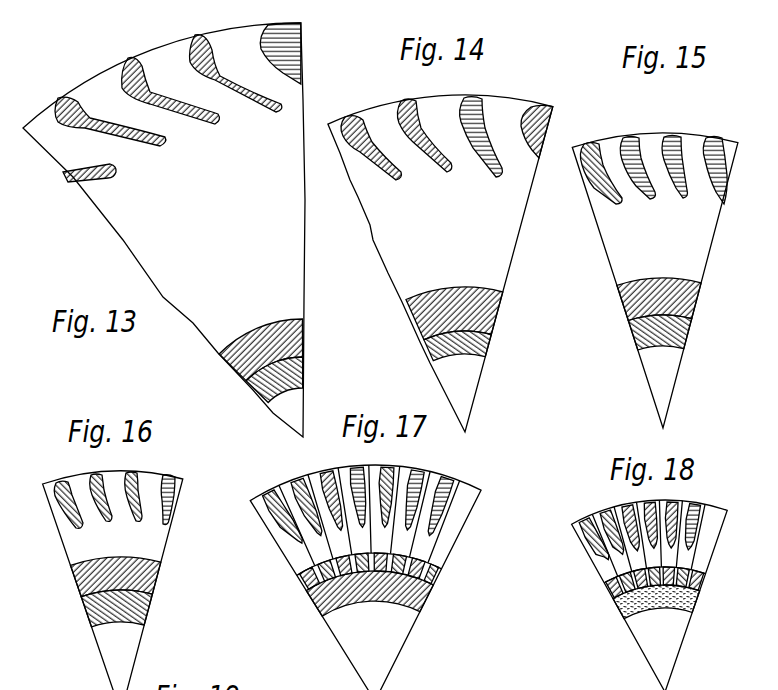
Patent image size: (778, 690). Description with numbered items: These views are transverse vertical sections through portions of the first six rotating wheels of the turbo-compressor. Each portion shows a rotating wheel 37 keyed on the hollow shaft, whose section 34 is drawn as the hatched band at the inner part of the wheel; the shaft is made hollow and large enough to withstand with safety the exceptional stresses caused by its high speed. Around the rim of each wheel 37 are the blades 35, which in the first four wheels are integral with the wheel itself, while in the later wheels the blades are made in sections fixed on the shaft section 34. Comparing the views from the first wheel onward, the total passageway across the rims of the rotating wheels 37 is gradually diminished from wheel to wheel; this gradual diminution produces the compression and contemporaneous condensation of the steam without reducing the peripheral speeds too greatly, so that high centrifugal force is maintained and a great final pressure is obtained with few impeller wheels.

In FIG. 13, the shaft section 34 is at (310, 362).
In FIG. 14, the shaft section 34 is at (493, 340).
In FIG. 15, the shaft section 34 is at (690, 337).
In FIG. 16, the shaft section 34 is at (152, 605).
In FIG. 17, the shaft section 34 is at (423, 597).
In FIG. 18, the shaft section 34 is at (702, 603).
In FIG. 13, the blade 35 is at (77, 103).
In FIG. 14, the blade 35 is at (533, 113).
In FIG. 15, the blade 35 is at (717, 140).
In FIG. 16, the blade 35 is at (67, 512).
In FIG. 13, the rotating wheel 37 is at (107, 213).
In FIG. 14, the rotating wheel 37 is at (388, 248).
In FIG. 15, the rotating wheel 37 is at (610, 240).
In FIG. 16, the rotating wheel 37 is at (163, 540).
In FIG. 17, the rotating wheel 37 is at (457, 477).
In FIG. 18, the rotating wheel 37 is at (592, 512).